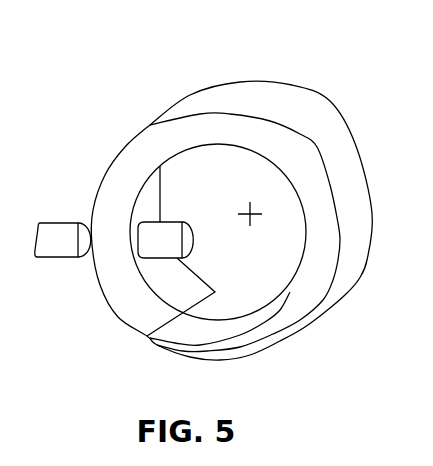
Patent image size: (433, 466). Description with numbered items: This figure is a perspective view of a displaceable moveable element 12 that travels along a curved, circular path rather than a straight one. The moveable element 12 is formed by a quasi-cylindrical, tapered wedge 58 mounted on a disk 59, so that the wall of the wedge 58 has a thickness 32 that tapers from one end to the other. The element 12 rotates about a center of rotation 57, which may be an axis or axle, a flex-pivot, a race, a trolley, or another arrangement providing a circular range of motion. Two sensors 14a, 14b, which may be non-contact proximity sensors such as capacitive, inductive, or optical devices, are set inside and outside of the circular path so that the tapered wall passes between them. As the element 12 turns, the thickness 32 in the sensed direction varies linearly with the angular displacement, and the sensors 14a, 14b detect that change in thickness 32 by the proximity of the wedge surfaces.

The quasi-cylindrical tapered wedge 58 is at (291, 74).
The thickness 32 is at (314, 150).
The moveable element 12 is at (230, 147).
The disk 59 is at (288, 182).
The center of rotation 57 is at (252, 217).
The sensor 14b is at (191, 255).
The sensor 14a is at (62, 258).